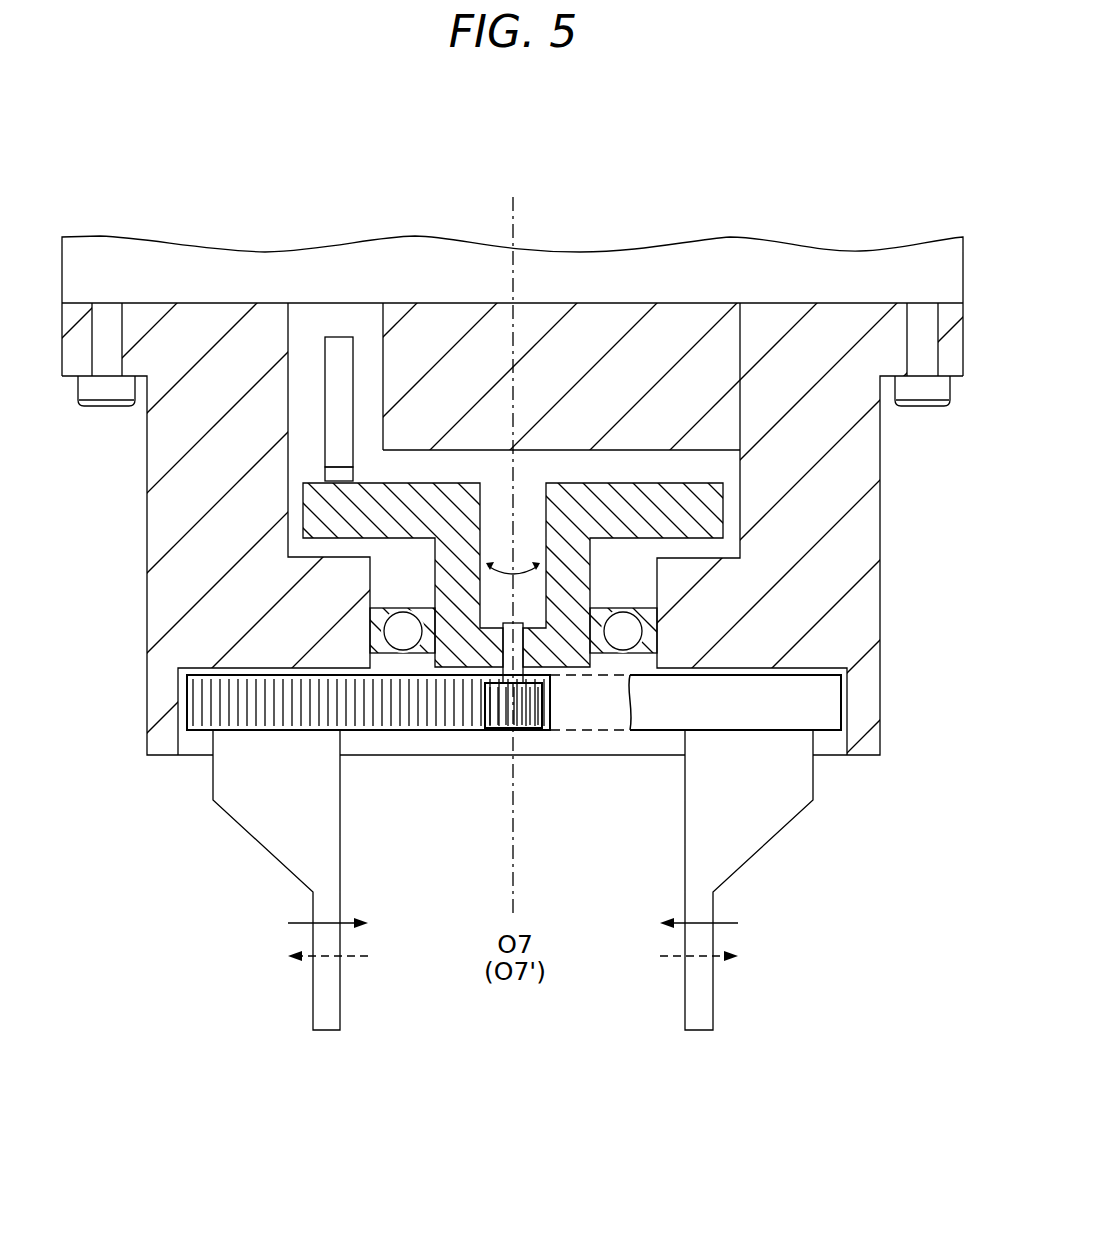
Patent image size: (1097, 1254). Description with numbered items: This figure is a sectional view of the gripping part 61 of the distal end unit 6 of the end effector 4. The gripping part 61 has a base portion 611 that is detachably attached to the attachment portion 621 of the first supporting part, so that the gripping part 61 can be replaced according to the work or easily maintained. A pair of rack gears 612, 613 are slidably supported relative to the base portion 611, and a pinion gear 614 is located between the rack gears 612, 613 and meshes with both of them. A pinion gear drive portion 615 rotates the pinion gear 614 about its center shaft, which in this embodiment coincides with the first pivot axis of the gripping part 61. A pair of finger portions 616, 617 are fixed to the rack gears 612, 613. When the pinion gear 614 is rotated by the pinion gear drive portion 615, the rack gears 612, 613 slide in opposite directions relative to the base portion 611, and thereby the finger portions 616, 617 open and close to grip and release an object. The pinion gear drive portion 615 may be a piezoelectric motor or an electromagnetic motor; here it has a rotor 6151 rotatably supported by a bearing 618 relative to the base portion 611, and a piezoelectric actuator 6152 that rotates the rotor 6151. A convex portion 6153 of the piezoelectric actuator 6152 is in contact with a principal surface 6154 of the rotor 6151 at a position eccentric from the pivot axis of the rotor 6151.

The end effector 4 is at (173, 855).
The distal end unit 6 is at (141, 205).
The gripping part 61 is at (133, 672).
The base portion 611 is at (862, 541).
The rack gear 612 is at (376, 716).
The rack gear 613 is at (776, 713).
The pinion gear 614 is at (493, 715).
The pinion gear drive portion 615 is at (548, 627).
The rotor 6151 is at (438, 505).
The piezoelectric actuator 6152 is at (338, 340).
The convex portion 6153 is at (333, 477).
The principal surface 6154 is at (568, 482).
The finger portion 616 is at (326, 1015).
The finger portion 617 is at (697, 1015).
The bearing 618 is at (650, 624).
The attachment portion 621 is at (812, 290).